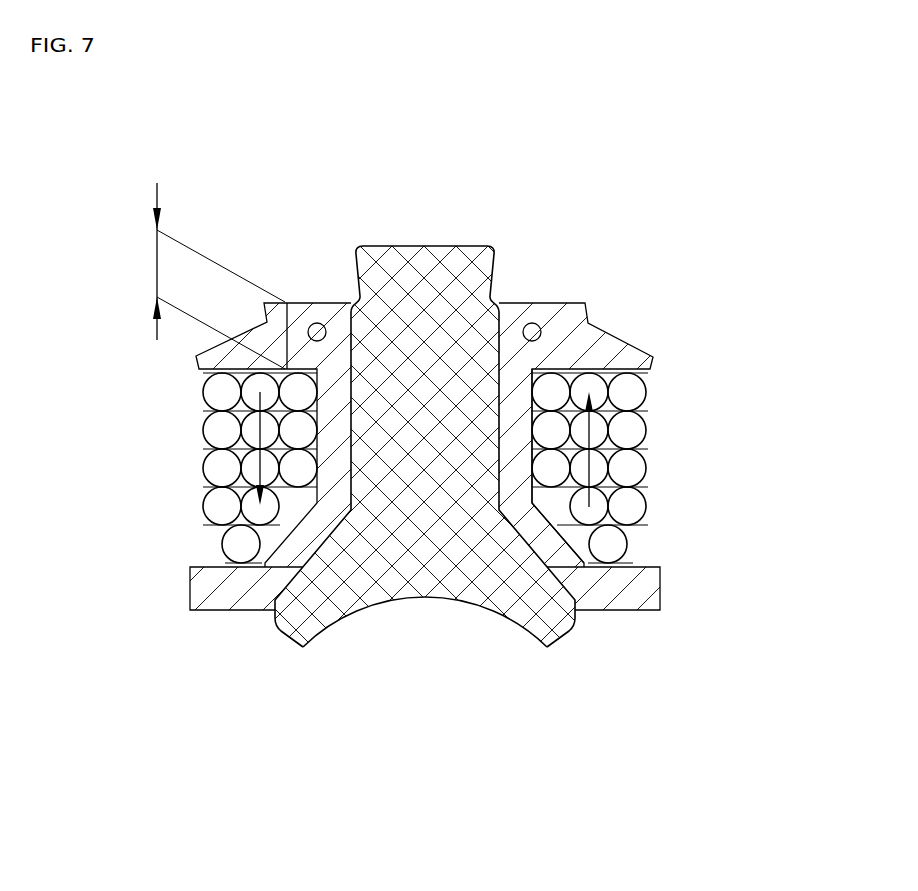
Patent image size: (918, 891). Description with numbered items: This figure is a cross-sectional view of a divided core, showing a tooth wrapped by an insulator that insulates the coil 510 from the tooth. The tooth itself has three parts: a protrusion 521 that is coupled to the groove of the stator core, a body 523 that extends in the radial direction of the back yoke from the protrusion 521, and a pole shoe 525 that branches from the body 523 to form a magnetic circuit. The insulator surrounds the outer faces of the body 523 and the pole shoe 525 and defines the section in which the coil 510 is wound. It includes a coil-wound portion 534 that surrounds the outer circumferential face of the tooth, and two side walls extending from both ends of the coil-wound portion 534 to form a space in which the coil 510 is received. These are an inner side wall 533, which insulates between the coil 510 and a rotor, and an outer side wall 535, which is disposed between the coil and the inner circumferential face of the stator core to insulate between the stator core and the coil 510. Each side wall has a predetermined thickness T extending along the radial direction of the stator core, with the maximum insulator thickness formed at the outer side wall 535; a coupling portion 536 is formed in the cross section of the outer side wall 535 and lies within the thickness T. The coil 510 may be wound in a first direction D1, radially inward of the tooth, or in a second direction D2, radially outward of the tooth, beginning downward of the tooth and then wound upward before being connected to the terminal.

The protrusion 521 is at (460, 262).
The body 523 is at (432, 362).
The pole shoe 525 is at (535, 635).
The inner side wall 533 is at (642, 590).
The coil-wound portion 534 is at (512, 440).
The outer side wall 535 is at (628, 360).
The coupling portion 536 is at (541, 332).
The coil 510 is at (220, 507).
The first direction D1 is at (260, 463).
The second direction D2 is at (590, 471).
The thickness T is at (157, 262).